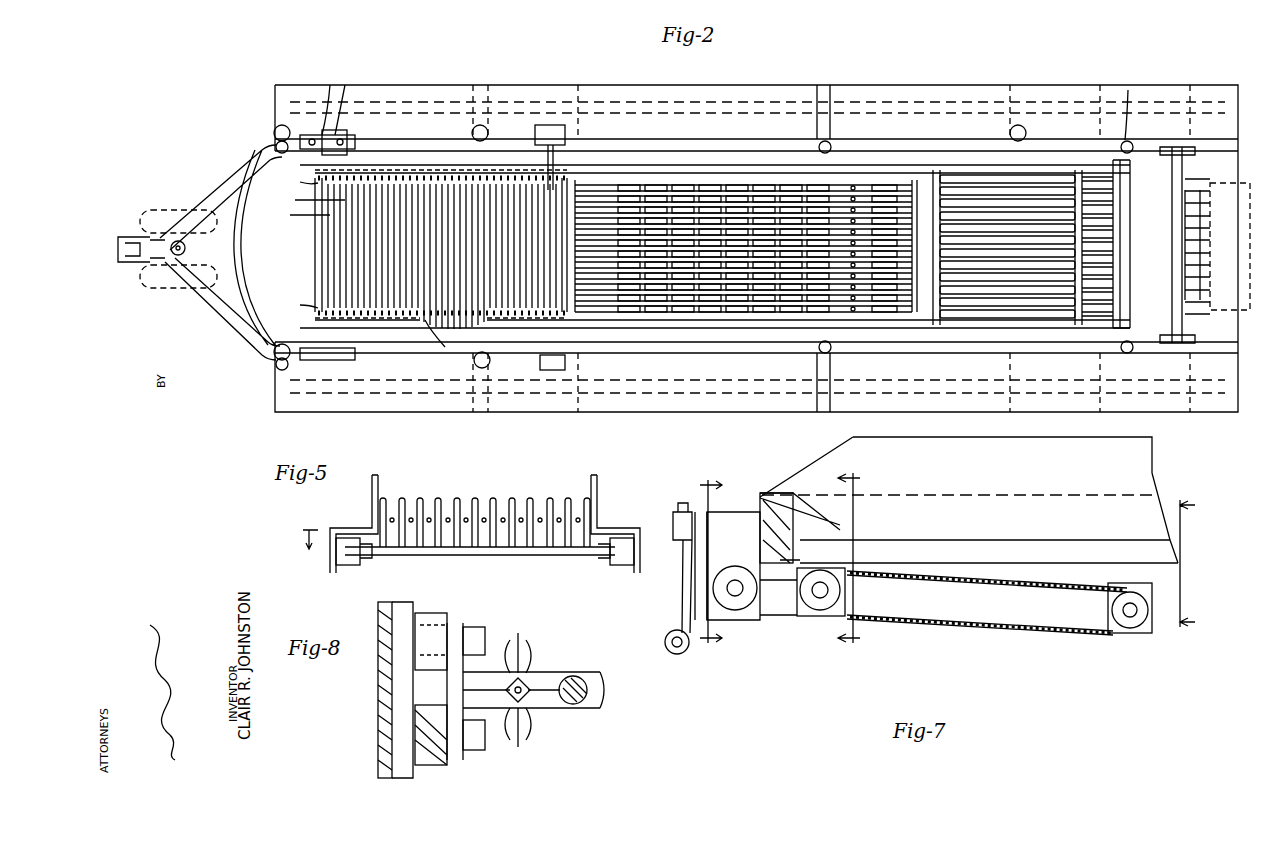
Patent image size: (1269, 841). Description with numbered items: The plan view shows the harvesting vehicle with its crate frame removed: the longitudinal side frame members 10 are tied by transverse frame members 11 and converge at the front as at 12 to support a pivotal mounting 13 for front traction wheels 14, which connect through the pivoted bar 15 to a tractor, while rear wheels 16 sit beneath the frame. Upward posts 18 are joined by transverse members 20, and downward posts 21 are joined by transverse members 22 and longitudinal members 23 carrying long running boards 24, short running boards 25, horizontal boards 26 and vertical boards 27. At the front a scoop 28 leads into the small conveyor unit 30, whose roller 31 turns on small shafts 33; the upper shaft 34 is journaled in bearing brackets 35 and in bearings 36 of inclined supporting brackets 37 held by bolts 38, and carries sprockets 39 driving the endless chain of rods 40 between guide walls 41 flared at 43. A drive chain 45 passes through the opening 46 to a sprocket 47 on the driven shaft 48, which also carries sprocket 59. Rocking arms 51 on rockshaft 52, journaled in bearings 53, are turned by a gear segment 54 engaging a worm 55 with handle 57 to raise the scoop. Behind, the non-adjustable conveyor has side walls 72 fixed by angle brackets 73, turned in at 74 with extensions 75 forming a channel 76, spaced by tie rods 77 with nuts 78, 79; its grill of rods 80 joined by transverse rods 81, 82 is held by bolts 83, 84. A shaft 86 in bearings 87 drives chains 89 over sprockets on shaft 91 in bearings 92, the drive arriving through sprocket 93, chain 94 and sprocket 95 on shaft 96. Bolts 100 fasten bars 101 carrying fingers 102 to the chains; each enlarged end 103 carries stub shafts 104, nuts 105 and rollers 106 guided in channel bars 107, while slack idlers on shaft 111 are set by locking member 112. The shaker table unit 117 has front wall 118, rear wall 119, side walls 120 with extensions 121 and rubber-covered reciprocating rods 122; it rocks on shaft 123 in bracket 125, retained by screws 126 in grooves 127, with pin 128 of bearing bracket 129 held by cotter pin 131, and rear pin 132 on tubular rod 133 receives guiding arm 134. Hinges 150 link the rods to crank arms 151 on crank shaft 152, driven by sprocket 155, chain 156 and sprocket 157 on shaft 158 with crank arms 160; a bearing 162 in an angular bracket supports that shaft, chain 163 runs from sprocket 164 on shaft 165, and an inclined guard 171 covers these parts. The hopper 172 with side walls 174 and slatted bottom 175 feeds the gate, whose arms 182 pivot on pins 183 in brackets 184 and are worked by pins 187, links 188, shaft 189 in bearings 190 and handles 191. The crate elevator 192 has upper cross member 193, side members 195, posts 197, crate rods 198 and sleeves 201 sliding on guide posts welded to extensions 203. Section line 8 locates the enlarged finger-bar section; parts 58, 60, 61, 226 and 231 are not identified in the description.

In FIG. 2, the side frame members 10 is at (420, 365).
In FIG. 2, the transverse frame members 11 is at (1060, 427).
In FIG. 2, the converging front ends 12 is at (134, 237).
In FIG. 7, the converging front ends 12 is at (850, 557).
In FIG. 2, the pivotal mounting 13 is at (178, 241).
In FIG. 2, the front traction wheels 14 is at (162, 288).
In FIG. 7, the front traction wheels 14 is at (1197, 563).
In FIG. 2, the pivoted bar 15 is at (122, 262).
In FIG. 7, the pivoted bar 15 is at (711, 560).
In FIG. 2, the rear wheels 16 is at (920, 249).
In FIG. 2, the posts 18 is at (276, 358).
In FIG. 2, the transverse members 20 is at (1216, 152).
In FIG. 2, the posts 21 is at (275, 358).
In FIG. 2, the transverse members 22 is at (840, 249).
In FIG. 2, the longitudinal members 23 is at (744, 252).
In FIG. 2, the running boards 24 is at (612, 390).
In FIG. 2, the short running boards 25 is at (1091, 248).
In FIG. 2, the horizontal boards 26 is at (944, 240).
In FIG. 2, the vertical boards 27 is at (930, 241).
In FIG. 2, the scoop 28 is at (240, 322).
In FIG. 2, the conveyor unit 30 is at (305, 257).
In FIG. 2, the roller 31 is at (318, 325).
In FIG. 2, the small shafts 33 is at (383, 337).
In FIG. 2, the upper shaft 34 is at (555, 241).
In FIG. 2, the bearing brackets 35 is at (530, 242).
In FIG. 2, the bearings 36 is at (401, 256).
In FIG. 2, the supporting brackets 37 is at (578, 244).
In FIG. 2, the bolts 38 is at (596, 250).
In FIG. 2, the sprockets 39 is at (574, 335).
In FIG. 2, the transverse rods 40 is at (361, 283).
In FIG. 2, the inner side walls 41 is at (441, 249).
In FIG. 2, the flared lower ends 43 is at (289, 243).
In FIG. 2, the drive chain 45 is at (601, 160).
In FIG. 2, the opening 46 is at (581, 165).
In FIG. 2, the sprocket 47 is at (463, 160).
In FIG. 2, the driven shaft 48 is at (538, 230).
In FIG. 2, the rocking arms 51 is at (273, 254).
In FIG. 2, the rockshaft 52 is at (308, 200).
In FIG. 2, the bearings 53 is at (358, 350).
In FIG. 2, the gear segment 54 is at (358, 60).
In FIG. 2, the worm 55 is at (339, 72).
In FIG. 2, the handle portion 57 is at (334, 104).
In FIG. 2, the bearing block 58 is at (531, 247).
In FIG. 2, the sprocket 59 is at (530, 153).
In FIG. 2, the sprocket 60 is at (525, 158).
In FIG. 2, the chain 61 is at (613, 128).
In FIG. 2, the side walls 72 is at (779, 251).
In FIG. 5, the side walls 72 is at (471, 571).
In FIG. 8, the side walls 72 is at (378, 672).
In FIG. 2, the angle brackets 73 is at (753, 280).
In FIG. 2, the inwardly turned portions 74 is at (738, 230).
In FIG. 5, the inwardly turned portions 74 is at (626, 538).
In FIG. 2, the inward extensions 75 is at (726, 254).
In FIG. 5, the inward extensions 75 is at (598, 482).
In FIG. 5, the channel 76 is at (482, 595).
In FIG. 2, the tie rods 77 is at (746, 246).
In FIG. 2, the inner nuts 78 is at (664, 248).
In FIG. 2, the outer nuts 79 is at (683, 262).
In FIG. 2, the longitudinal rods 80 is at (655, 400).
In FIG. 5, the longitudinal rods 80 is at (438, 498).
In FIG. 2, the transverse rod 81 is at (619, 385).
In FIG. 2, the transverse rod 82 is at (877, 373).
In FIG. 2, the bolts 83 is at (636, 247).
In FIG. 2, the bolts 84 is at (947, 245).
In FIG. 2, the rotatable shaft 86 is at (690, 92).
In FIG. 2, the bearings 87 is at (690, 239).
In FIG. 2, the endless drive chains 89 is at (688, 418).
In FIG. 5, the endless drive chains 89 is at (486, 589).
In FIG. 8, the endless drive chains 89 is at (522, 628).
In FIG. 2, the shaft 91 is at (873, 400).
In FIG. 2, the bearings 92 is at (863, 247).
In FIG. 2, the drive sprocket 93 is at (898, 92).
In FIG. 2, the drive chain 94 is at (893, 78).
In FIG. 2, the sprocket 95 is at (940, 90).
In FIG. 2, the shaft 96 is at (926, 45).
In FIG. 5, the bolts 100 is at (592, 558).
In FIG. 8, the bolts 100 is at (535, 670).
In FIG. 2, the transverse bars 101 is at (754, 58).
In FIG. 5, the transverse bars 101 is at (472, 556).
In FIG. 8, the transverse bars 101 is at (565, 708).
In FIG. 2, the fingers 102 is at (750, 47).
In FIG. 5, the fingers 102 is at (530, 498).
In FIG. 8, the fingers 102 is at (585, 675).
In FIG. 5, the enlarged end portion 103 is at (490, 603).
In FIG. 8, the enlarged end portion 103 is at (447, 705).
In FIG. 5, the stub shafts 104 is at (462, 540).
In FIG. 8, the stub shafts 104 is at (453, 683).
In FIG. 5, the nuts 105 is at (502, 539).
In FIG. 8, the nuts 105 is at (494, 690).
In FIG. 5, the rollers 106 is at (397, 604).
In FIG. 8, the rollers 106 is at (478, 790).
In FIG. 5, the channel bars 107 is at (493, 540).
In FIG. 8, the channel bars 107 is at (392, 700).
In FIG. 7, the shaft 111 is at (734, 455).
In FIG. 7, the turning and locking member 112 is at (730, 465).
In FIG. 2, the shaker table unit 117 is at (1065, 427).
In FIG. 7, the shaker table unit 117 is at (1170, 495).
In FIG. 2, the front wall 118 is at (920, 387).
In FIG. 7, the front wall 118 is at (765, 497).
In FIG. 2, the rear wall 119 is at (1136, 244).
In FIG. 2, the side walls 120 is at (1071, 255).
In FIG. 7, the side walls 120 is at (1170, 518).
In FIG. 2, the upward extensions 121 is at (976, 245).
In FIG. 7, the upward extensions 121 is at (1162, 482).
In FIG. 2, the reciprocating rods 122 is at (1060, 190).
In FIG. 7, the reciprocating rods 122 is at (1180, 553).
In FIG. 7, the shaft 123 is at (684, 652).
In FIG. 7, the vertical bracket 125 is at (682, 612).
In FIG. 7, the screws 126 is at (670, 652).
In FIG. 7, the grooves 127 is at (668, 687).
In FIG. 7, the pin 128 is at (677, 452).
In FIG. 7, the bearing bracket 129 is at (690, 462).
In FIG. 7, the cotter pin 131 is at (684, 485).
In FIG. 2, the pin 132 is at (1109, 364).
In FIG. 2, the tubular rod 133 is at (1227, 210).
In FIG. 2, the vertical arm 134 is at (1227, 222).
In FIG. 7, the hinges 150 is at (1105, 588).
In FIG. 7, the crank arms 151 is at (1150, 608).
In FIG. 7, the crank shaft 152 is at (1130, 628).
In FIG. 2, the sprocket 155 is at (1050, 175).
In FIG. 7, the sprocket 155 is at (1179, 642).
In FIG. 2, the drive chain 156 is at (994, 113).
In FIG. 7, the drive chain 156 is at (1025, 633).
In FIG. 2, the sprocket 157 is at (943, 125).
In FIG. 7, the sprocket 157 is at (800, 618).
In FIG. 7, the shaft 158 is at (818, 612).
In FIG. 7, the crank arms 160 is at (845, 598).
In FIG. 7, the bearing 162 is at (840, 535).
In FIG. 7, the drive chain 163 is at (750, 622).
In FIG. 7, the sprocket 164 is at (715, 622).
In FIG. 7, the shaft 165 is at (735, 580).
In FIG. 7, the inclined guard 171 is at (845, 512).
In FIG. 2, the hopper 172 is at (1137, 90).
In FIG. 2, the side walls 174 is at (1200, 245).
In FIG. 2, the bottom slats 175 is at (1085, 372).
In FIG. 2, the arms 182 is at (1096, 263).
In FIG. 2, the pin 183 is at (990, 345).
In FIG. 2, the bracket 184 is at (980, 400).
In FIG. 2, the pin 187 is at (1213, 234).
In FIG. 2, the short link 188 is at (1213, 241).
In FIG. 2, the transverse shaft 189 is at (1217, 246).
In FIG. 2, the bearings 190 is at (1195, 248).
In FIG. 2, the handles 191 is at (1181, 248).
In FIG. 2, the crate elevator 192 is at (1227, 268).
In FIG. 2, the upper cross frame member 193 is at (1227, 235).
In FIG. 2, the vertical side members 195 is at (1217, 345).
In FIG. 2, the vertical posts 197 is at (1223, 222).
In FIG. 2, the crate supporting rods 198 is at (1233, 250).
In FIG. 2, the annular sleeves 201 is at (1217, 327).
In FIG. 2, the rearward extensions 203 is at (1152, 120).
In FIG. 2, the bearing 226 is at (1119, 382).
In FIG. 2, the bolt 231 is at (1234, 251).
In FIG. 5, the section line 8— 8 is at (310, 532).